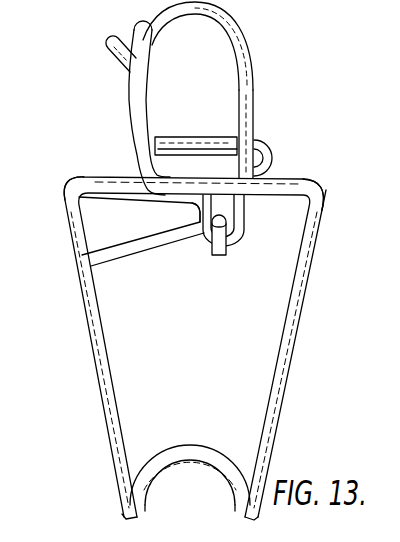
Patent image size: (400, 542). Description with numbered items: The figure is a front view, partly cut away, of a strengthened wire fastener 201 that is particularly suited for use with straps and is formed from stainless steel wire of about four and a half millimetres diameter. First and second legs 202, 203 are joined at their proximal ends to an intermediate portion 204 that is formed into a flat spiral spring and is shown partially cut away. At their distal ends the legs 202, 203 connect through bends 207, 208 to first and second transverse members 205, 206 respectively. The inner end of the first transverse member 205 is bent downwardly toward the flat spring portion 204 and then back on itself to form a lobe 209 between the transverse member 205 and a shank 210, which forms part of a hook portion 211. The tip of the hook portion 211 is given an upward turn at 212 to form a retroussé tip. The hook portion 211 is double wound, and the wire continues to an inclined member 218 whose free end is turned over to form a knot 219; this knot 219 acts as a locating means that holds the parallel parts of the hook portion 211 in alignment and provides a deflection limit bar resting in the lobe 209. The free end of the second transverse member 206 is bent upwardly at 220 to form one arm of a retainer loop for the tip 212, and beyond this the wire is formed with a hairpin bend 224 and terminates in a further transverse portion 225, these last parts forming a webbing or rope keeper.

The fastener 201 is at (300, 346).
The first leg 202 is at (94, 341).
The second leg 203 is at (307, 266).
The intermediate portion 204 is at (236, 478).
The first transverse member 205 is at (103, 180).
The second transverse member 206 is at (308, 182).
The bend 207 is at (70, 185).
The bend 208 is at (326, 208).
The lobe 209 is at (200, 212).
The shank 210 is at (254, 118).
The hook portion 211 is at (248, 44).
The retroussé tip 212 is at (112, 56).
The inclined member 218 is at (134, 257).
The knot 219 is at (222, 224).
The arm 220 is at (146, 97).
The hairpin bend 224 is at (270, 157).
The further transverse portion 225 is at (202, 142).